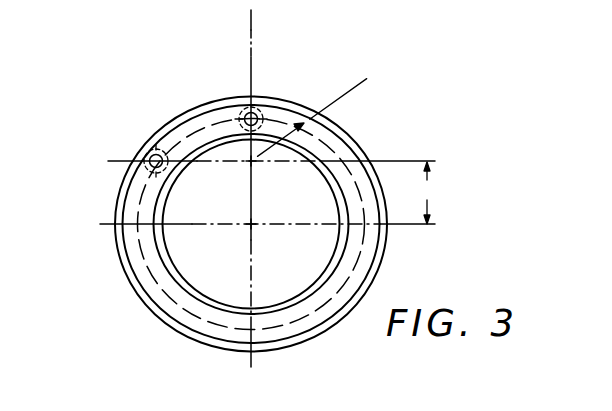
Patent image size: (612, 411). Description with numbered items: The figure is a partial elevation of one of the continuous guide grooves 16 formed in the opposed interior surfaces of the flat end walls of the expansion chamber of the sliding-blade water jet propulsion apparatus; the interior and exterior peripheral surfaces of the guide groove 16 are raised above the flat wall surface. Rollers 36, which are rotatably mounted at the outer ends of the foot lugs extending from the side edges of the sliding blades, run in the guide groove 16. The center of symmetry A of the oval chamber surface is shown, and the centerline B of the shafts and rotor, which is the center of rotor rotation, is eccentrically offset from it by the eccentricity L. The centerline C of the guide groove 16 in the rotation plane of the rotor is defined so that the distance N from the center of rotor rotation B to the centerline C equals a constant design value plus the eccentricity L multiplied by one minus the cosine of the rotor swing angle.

The guide groove 16 is at (331, 137).
The roller 36 is at (262, 112).
The center of symmetry A is at (249, 226).
The centerline of the shafts and rotor B is at (252, 32).
The centerline of the guide grooves C is at (360, 257).
The distance from center of rotor rotation to groove centerline N is at (275, 142).
The eccentricity L is at (425, 193).